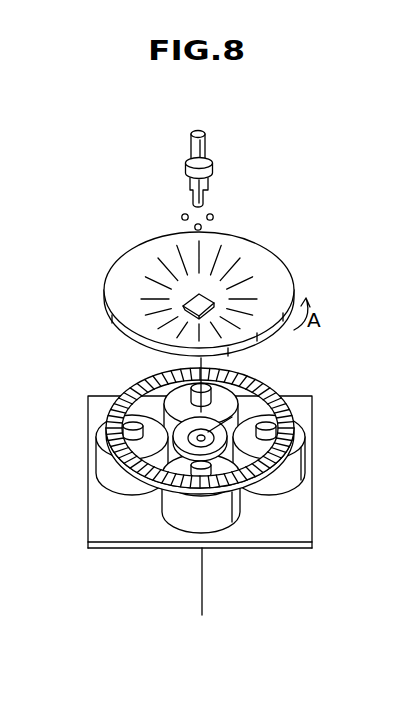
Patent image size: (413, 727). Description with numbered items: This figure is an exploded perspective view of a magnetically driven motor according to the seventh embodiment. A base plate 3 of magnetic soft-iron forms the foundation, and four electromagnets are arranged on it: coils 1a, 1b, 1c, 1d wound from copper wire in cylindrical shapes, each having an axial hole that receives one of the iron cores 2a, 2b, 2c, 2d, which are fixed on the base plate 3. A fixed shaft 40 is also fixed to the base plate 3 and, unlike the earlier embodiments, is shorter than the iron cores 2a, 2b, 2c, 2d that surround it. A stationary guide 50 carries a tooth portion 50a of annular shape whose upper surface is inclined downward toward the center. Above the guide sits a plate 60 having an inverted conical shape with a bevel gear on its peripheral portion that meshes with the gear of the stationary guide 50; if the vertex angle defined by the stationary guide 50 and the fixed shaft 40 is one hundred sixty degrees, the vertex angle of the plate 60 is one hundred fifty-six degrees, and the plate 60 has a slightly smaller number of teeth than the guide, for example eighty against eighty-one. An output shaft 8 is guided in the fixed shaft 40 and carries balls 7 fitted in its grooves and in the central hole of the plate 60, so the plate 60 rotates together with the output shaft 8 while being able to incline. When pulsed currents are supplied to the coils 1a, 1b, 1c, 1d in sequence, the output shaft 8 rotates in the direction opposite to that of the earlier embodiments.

The base plate 3 is at (297, 520).
The coil 1a is at (293, 467).
The coil 1b is at (218, 515).
The coil 1c is at (94, 468).
The coil 1d is at (168, 380).
The iron core 2a is at (277, 422).
The iron core 2b is at (197, 470).
The iron core 2c is at (124, 424).
The iron core 2d is at (172, 381).
The fixed shaft 40 is at (234, 421).
The stationary guide 50 is at (224, 421).
The tooth portion 50a is at (258, 380).
The plate 60 is at (257, 262).
The balls 7 is at (215, 214).
The output shaft 8 is at (207, 140).